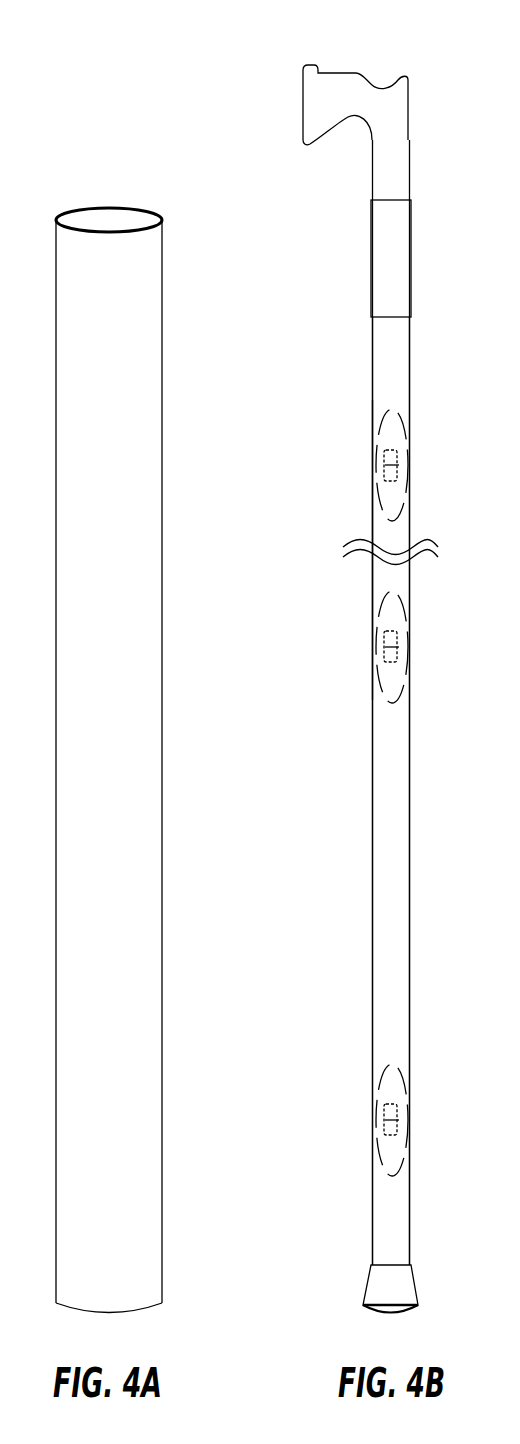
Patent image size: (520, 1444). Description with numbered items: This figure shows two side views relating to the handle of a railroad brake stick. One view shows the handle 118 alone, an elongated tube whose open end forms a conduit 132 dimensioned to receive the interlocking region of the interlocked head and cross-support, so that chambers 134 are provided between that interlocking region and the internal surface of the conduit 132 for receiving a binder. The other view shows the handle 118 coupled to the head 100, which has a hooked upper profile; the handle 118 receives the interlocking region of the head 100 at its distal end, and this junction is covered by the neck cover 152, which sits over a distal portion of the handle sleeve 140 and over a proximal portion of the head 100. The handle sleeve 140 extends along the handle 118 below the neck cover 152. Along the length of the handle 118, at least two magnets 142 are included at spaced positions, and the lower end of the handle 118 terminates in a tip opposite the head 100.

In FIG. 4B, the head 100 is at (335, 85).
In FIG. 4A, the handle 118 is at (125, 762).
In FIG. 4B, the handle 118 is at (390, 535).
In FIG. 4A, the conduit 132 is at (104, 219).
In FIG. 4B, the chambers 134 is at (440, 1226).
In FIG. 4B, the handle sleeve 140 is at (390, 337).
In FIG. 4B, the magnets 142 is at (397, 464).
In FIG. 4B, the neck cover 152 is at (411, 278).